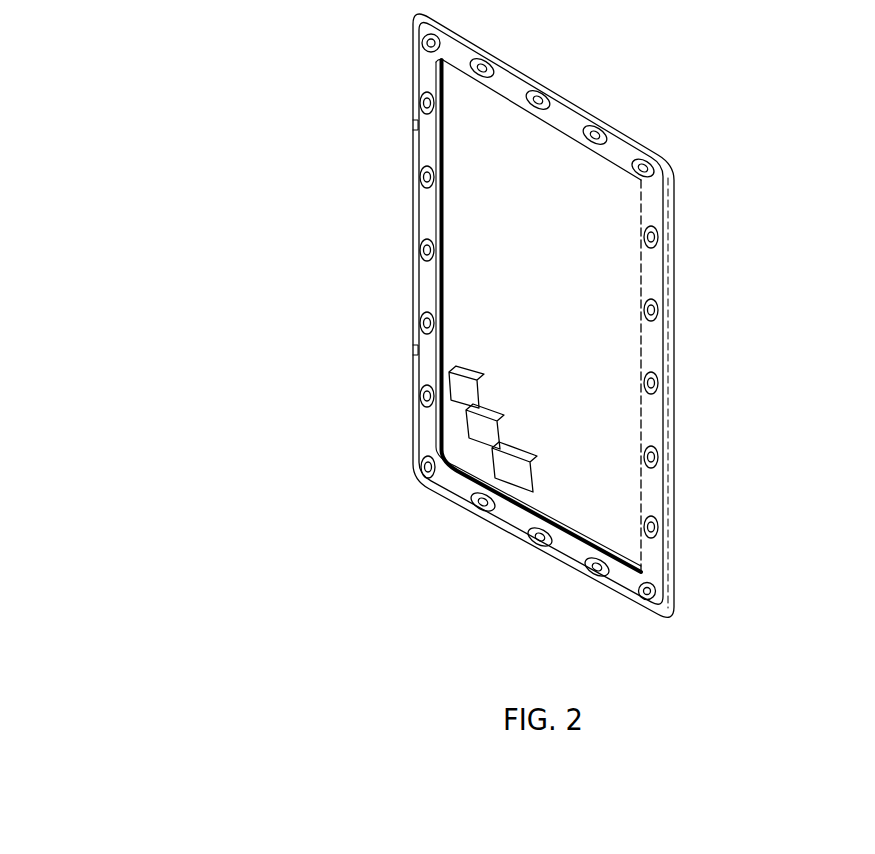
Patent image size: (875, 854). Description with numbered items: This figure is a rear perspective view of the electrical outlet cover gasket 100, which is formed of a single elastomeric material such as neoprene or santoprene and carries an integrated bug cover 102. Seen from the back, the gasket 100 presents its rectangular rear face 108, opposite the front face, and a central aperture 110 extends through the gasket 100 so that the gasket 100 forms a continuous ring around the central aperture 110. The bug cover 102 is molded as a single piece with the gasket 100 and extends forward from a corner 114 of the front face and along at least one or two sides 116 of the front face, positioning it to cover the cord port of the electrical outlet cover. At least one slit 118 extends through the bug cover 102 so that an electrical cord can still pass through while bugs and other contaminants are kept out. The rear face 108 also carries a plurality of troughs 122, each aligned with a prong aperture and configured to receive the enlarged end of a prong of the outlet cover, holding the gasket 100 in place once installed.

The gasket 100 is at (290, 148).
The bug cover 102 is at (438, 437).
The rear face 108 is at (648, 342).
The central aperture 110 is at (585, 253).
The corner 114 is at (418, 470).
The side 116 is at (413, 167).
The slit 118 is at (530, 477).
The trough 122 is at (423, 327).